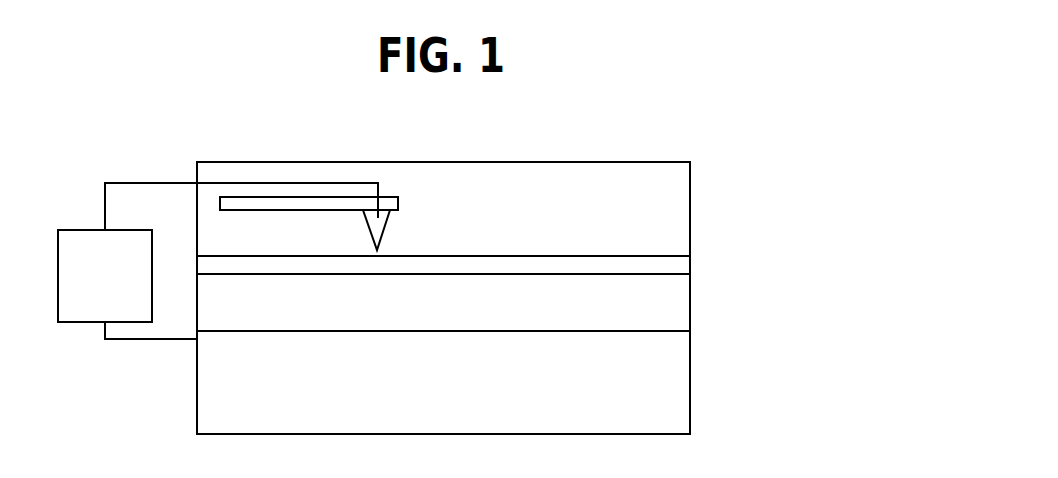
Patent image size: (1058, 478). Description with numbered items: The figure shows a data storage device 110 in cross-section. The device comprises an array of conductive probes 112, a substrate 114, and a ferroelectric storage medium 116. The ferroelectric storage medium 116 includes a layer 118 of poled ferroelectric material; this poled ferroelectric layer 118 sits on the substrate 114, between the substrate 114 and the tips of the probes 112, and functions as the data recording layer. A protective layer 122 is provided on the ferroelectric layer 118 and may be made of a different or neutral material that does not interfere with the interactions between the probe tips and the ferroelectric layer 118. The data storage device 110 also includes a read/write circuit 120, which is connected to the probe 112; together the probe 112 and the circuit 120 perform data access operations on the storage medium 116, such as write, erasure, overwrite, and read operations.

The data storage device 110 is at (672, 68).
The conductive probes 112 is at (383, 227).
The substrate 114 is at (690, 357).
The ferroelectric storage medium 116 is at (808, 329).
The poled ferroelectric layer 118 is at (690, 301).
The read/write circuit 120 is at (58, 267).
The protective layer 122 is at (690, 266).